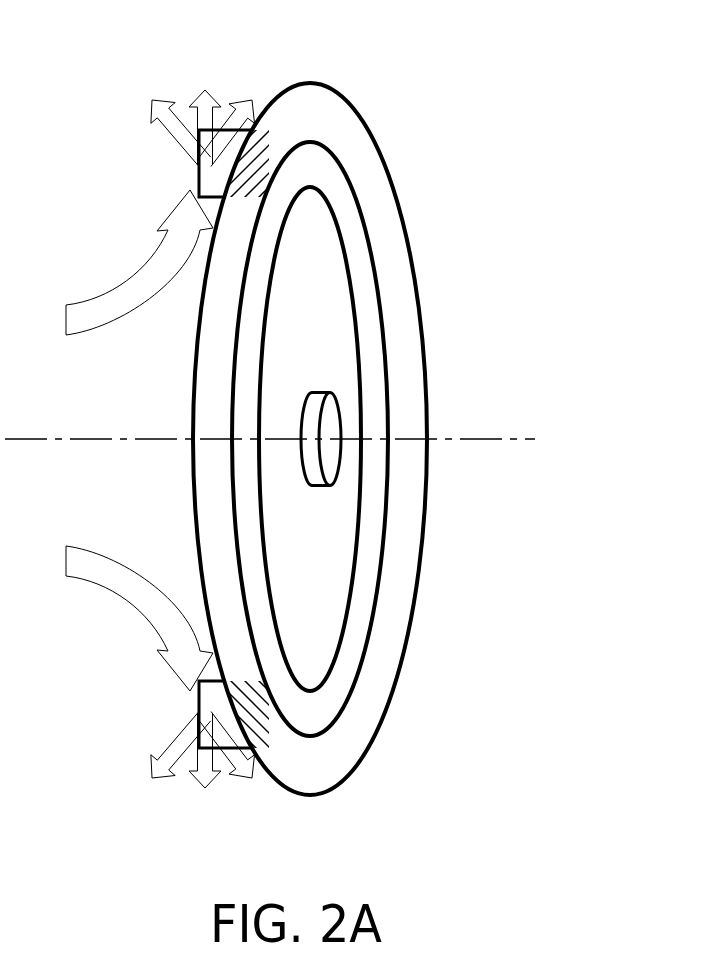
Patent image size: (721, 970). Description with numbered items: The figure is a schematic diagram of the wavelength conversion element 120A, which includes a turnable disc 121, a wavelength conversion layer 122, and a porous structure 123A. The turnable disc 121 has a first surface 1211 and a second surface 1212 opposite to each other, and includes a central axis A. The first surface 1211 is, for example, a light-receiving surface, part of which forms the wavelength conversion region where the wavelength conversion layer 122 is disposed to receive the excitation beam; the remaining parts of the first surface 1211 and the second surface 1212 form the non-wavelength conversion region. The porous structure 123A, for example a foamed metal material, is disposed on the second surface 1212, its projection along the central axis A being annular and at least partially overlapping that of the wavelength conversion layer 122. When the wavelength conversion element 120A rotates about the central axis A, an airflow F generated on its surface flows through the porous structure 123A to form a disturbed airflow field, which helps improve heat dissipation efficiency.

The wavelength conversion element 120A is at (645, 818).
The turnable disc 121 is at (322, 108).
The first surface 1211 is at (336, 127).
The second surface 1212 is at (296, 123).
The wavelength conversion layer 122 is at (363, 267).
The porous structure 123A is at (199, 176).
The central axis A is at (284, 440).
The airflow F is at (76, 321).